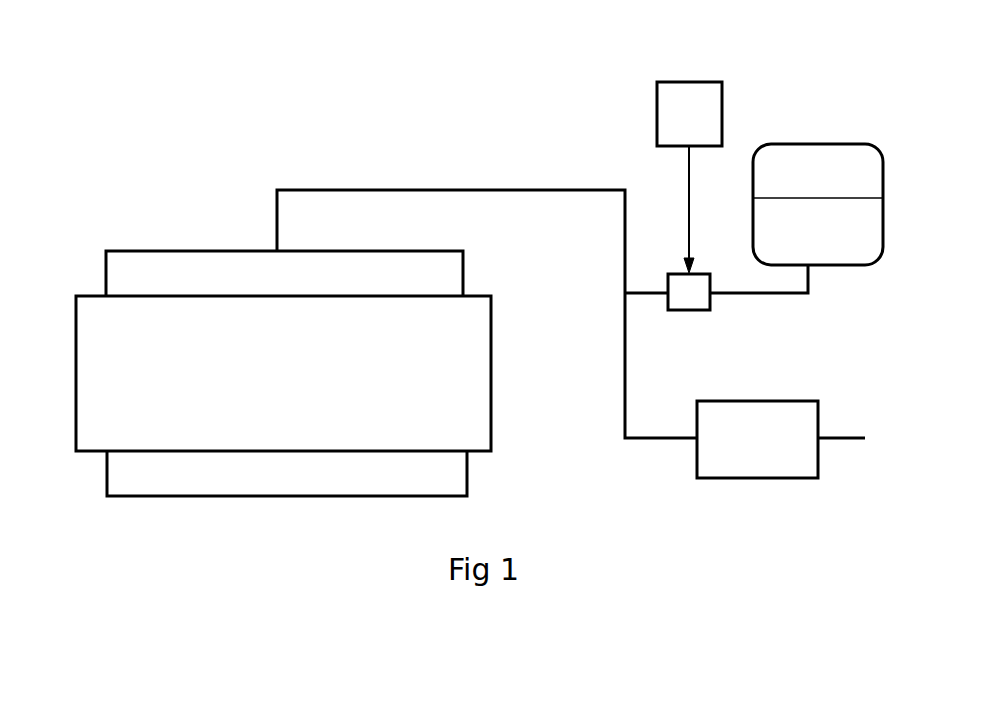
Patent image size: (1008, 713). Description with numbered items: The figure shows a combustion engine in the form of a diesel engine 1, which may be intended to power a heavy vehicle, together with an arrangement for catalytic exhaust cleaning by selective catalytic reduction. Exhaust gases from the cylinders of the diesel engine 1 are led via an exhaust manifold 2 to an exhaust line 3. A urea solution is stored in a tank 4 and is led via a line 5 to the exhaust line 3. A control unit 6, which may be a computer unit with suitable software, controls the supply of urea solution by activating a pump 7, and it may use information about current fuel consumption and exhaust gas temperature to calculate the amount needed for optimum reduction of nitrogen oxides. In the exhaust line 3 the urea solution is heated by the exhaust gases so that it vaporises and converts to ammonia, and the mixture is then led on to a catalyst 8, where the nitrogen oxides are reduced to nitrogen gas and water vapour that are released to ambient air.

The diesel engine 1 is at (129, 357).
The exhaust manifold 2 is at (243, 269).
The exhaust line 3 is at (450, 189).
The tank 4 is at (812, 158).
The line 5 is at (767, 295).
The control unit 6 is at (695, 103).
The pump 7 is at (690, 294).
The catalyst 8 is at (748, 442).